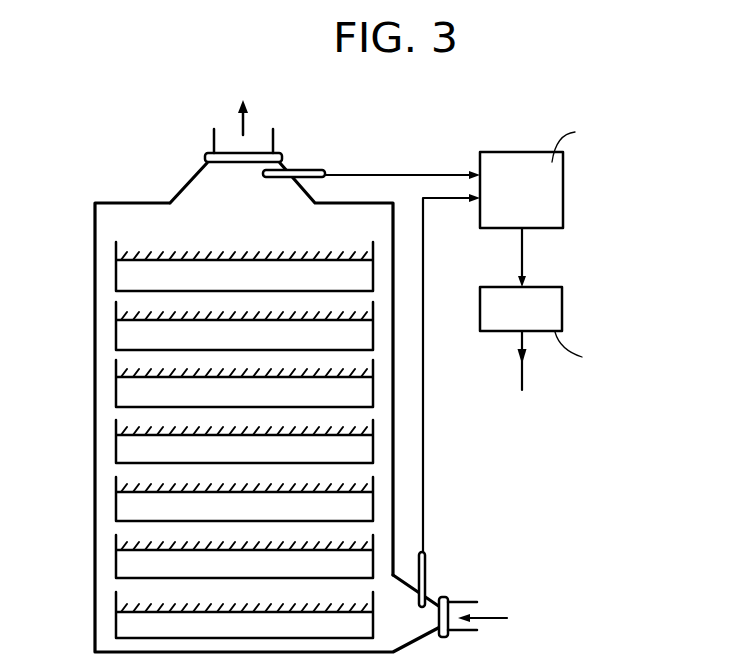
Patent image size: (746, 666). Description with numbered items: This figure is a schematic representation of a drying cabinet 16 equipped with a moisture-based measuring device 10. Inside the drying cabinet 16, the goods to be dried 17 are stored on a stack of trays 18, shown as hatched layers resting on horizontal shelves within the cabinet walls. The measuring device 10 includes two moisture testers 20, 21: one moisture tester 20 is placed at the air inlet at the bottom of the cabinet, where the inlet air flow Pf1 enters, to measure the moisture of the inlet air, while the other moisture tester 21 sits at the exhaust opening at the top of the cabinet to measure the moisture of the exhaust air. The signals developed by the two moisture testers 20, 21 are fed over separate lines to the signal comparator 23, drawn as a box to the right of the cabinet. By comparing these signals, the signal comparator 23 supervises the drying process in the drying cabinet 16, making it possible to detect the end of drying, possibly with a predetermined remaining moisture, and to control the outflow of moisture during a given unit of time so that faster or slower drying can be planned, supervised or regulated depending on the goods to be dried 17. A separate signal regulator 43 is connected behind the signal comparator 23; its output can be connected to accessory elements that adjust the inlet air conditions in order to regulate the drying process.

The measuring device 10 is at (478, 404).
The drying cabinet 16 is at (66, 234).
The goods to be dried 17 is at (215, 258).
The trays 18 is at (98, 372).
The moisture tester 20 is at (425, 568).
The moisture tester 21 is at (303, 170).
The signal comparator 23 is at (558, 218).
The signal regulator 43 is at (550, 310).
The inlet fluid flow Pf1 is at (488, 617).